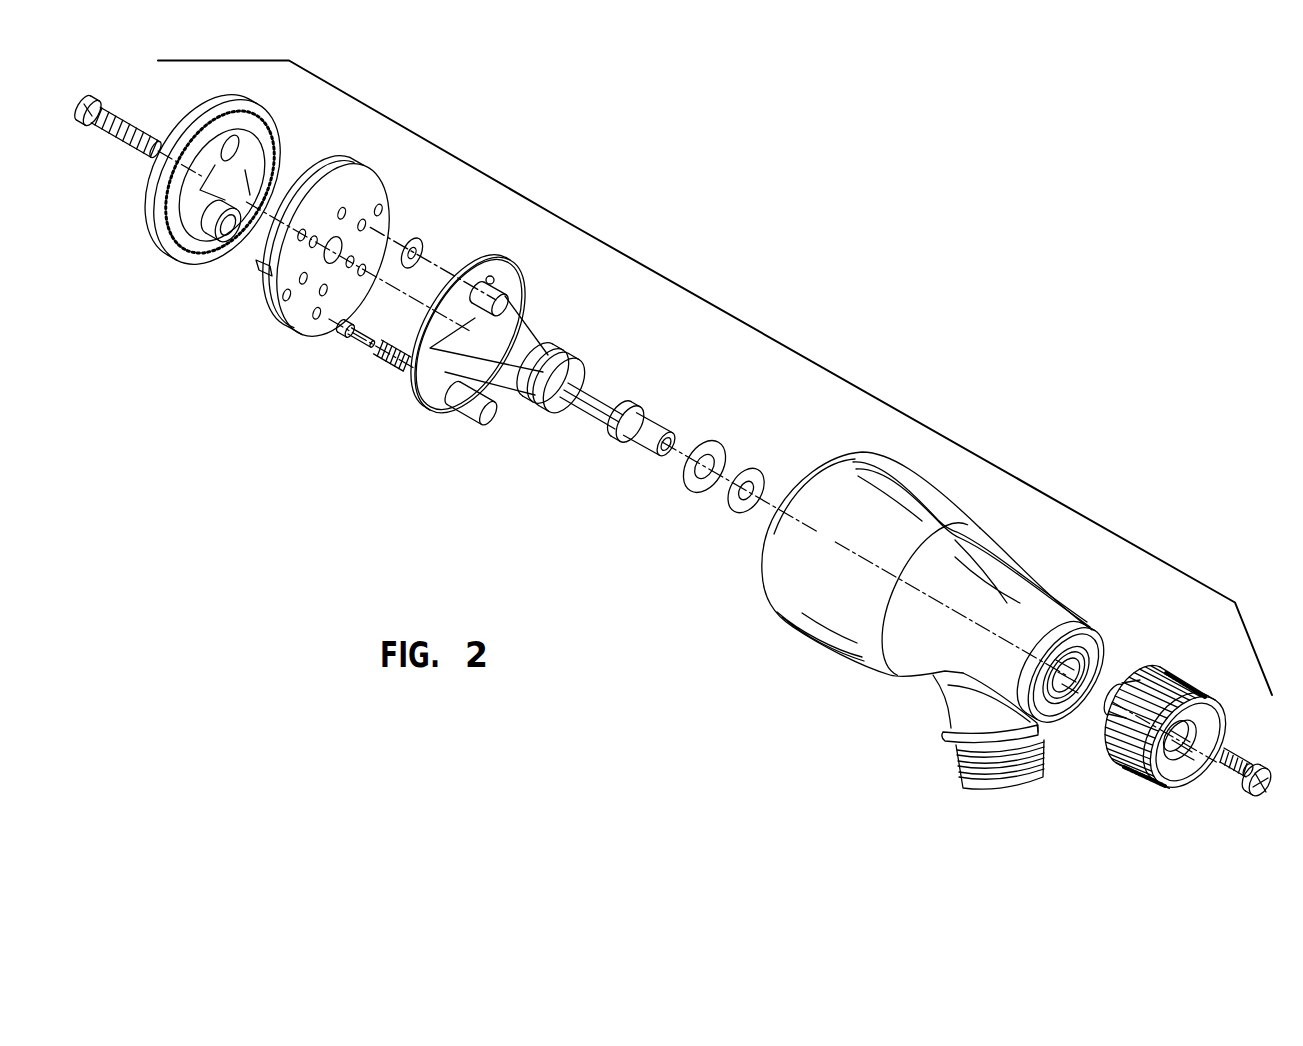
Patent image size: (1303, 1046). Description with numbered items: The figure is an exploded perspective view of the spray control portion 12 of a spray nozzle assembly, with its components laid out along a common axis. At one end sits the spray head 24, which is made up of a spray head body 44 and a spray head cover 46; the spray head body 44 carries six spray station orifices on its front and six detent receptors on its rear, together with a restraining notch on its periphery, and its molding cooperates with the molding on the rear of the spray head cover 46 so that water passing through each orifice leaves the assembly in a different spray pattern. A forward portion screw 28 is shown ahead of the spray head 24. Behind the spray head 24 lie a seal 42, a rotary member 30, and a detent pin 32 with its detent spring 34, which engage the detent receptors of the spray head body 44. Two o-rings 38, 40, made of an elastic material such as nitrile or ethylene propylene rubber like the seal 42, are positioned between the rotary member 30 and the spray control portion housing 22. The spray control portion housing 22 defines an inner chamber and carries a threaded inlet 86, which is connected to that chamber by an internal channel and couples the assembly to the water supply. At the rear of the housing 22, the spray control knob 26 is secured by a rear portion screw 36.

The spray control portion 12 is at (895, 220).
The spray control portion housing 22 is at (828, 657).
The spray head 24 is at (428, 124).
The spray control knob 26 is at (1126, 760).
The forward portion screw 28 is at (120, 142).
The rotary member 30 is at (556, 332).
The detent pin 32 is at (352, 343).
The detent spring 34 is at (387, 364).
The rear portion screw 36 is at (1243, 785).
The o-ring 38 is at (713, 445).
The o-ring 40 is at (742, 508).
The seal 42 is at (422, 246).
The spray head body 44 is at (282, 322).
The spray head cover 46 is at (190, 262).
The threaded inlet 86 is at (952, 765).